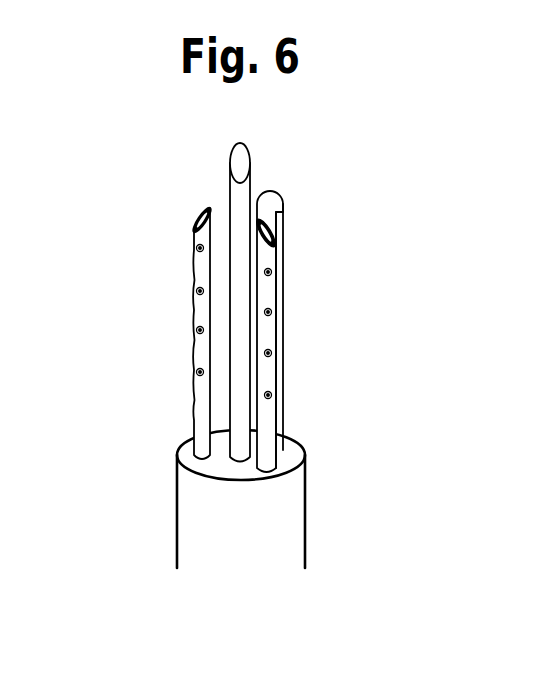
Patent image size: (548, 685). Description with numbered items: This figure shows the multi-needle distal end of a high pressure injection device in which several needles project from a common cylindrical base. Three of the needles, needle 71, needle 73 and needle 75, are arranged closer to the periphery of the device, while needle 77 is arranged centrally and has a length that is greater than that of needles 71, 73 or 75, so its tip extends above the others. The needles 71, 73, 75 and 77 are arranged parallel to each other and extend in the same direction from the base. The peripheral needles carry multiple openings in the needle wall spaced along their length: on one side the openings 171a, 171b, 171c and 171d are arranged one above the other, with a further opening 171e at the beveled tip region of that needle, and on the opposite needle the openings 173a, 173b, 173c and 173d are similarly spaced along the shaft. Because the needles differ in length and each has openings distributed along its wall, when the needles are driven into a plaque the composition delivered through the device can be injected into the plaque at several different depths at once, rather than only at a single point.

The needle 71 is at (207, 412).
The needle 73 is at (270, 413).
The needle 75 is at (272, 223).
The needle 77 is at (240, 210).
The opening 171a is at (196, 373).
The opening 171b is at (196, 330).
The opening 171c is at (196, 291).
The opening 171d is at (196, 248).
The beveled opening of first tube 171e is at (198, 220).
The opening 173a is at (272, 396).
The opening 173b is at (272, 354).
The opening 173c is at (272, 312).
The opening 173d is at (273, 233).